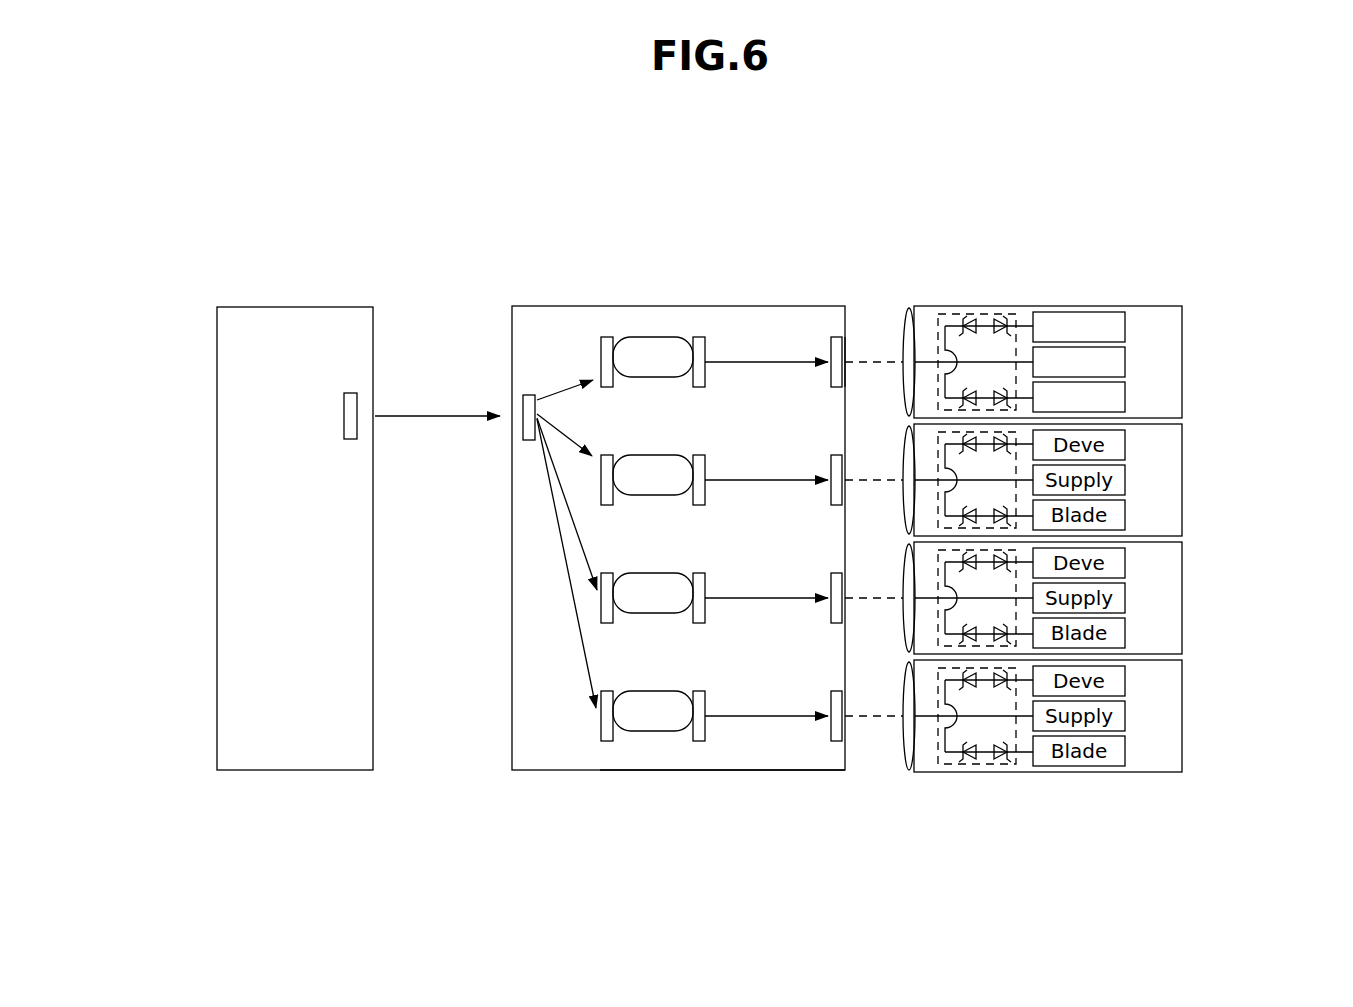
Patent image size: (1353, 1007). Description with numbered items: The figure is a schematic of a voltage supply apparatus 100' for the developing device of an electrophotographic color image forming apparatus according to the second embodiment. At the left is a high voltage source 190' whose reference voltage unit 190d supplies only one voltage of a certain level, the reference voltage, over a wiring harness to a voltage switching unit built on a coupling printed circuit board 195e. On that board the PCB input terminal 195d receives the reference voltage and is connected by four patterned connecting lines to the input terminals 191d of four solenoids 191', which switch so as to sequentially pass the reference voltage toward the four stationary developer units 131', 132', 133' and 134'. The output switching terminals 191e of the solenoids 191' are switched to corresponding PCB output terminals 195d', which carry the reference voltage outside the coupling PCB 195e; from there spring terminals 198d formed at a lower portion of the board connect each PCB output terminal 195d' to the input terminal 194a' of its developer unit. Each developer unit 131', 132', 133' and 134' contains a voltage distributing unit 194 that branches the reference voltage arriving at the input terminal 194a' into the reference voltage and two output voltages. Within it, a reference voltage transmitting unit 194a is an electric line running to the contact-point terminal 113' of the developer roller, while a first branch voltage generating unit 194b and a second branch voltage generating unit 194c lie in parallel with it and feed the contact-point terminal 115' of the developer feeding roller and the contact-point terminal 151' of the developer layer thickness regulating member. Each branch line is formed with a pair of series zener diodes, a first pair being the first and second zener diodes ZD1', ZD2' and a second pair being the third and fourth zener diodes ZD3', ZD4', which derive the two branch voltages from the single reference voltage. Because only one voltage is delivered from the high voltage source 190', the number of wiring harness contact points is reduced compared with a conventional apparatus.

The voltage supply apparatus 100' is at (341, 163).
The high voltage source 190' is at (289, 525).
The reference voltage unit 190d is at (357, 400).
The PCB input terminal 195d is at (468, 435).
The PCB output terminals 195d' is at (774, 378).
The coupling printed circuit board 195e is at (697, 776).
The input terminals of the solenoids 191d is at (605, 336).
The solenoids 191' is at (647, 285).
The output switching terminals 191e is at (698, 336).
The spring terminals 198d is at (848, 318).
The input terminals of the stationary developer units 194a' is at (870, 307).
The reference voltage transmitting unit 194a is at (946, 326).
The voltage distributing unit 194 is at (983, 376).
The first branch voltage generating unit 194b is at (1000, 320).
The second branch voltage generating unit 194c is at (945, 398).
The first zener diode ZD1' is at (941, 273).
The second zener diode ZD2' is at (1060, 286).
The third zener diode ZD3' is at (914, 453).
The fourth zener diode ZD4' is at (931, 473).
The contact-point terminal of the developer feeding roller 115' is at (1131, 297).
The contact-point terminal of the developer roller 113' is at (1145, 340).
The contact-point terminal of the developer layer thickness regulating member 151' is at (1142, 393).
The first stationary developer unit 131' is at (1063, 376).
The second stationary developer unit 132' is at (1102, 480).
The third stationary developer unit 133' is at (1102, 598).
The fourth stationary developer unit 134' is at (1102, 716).